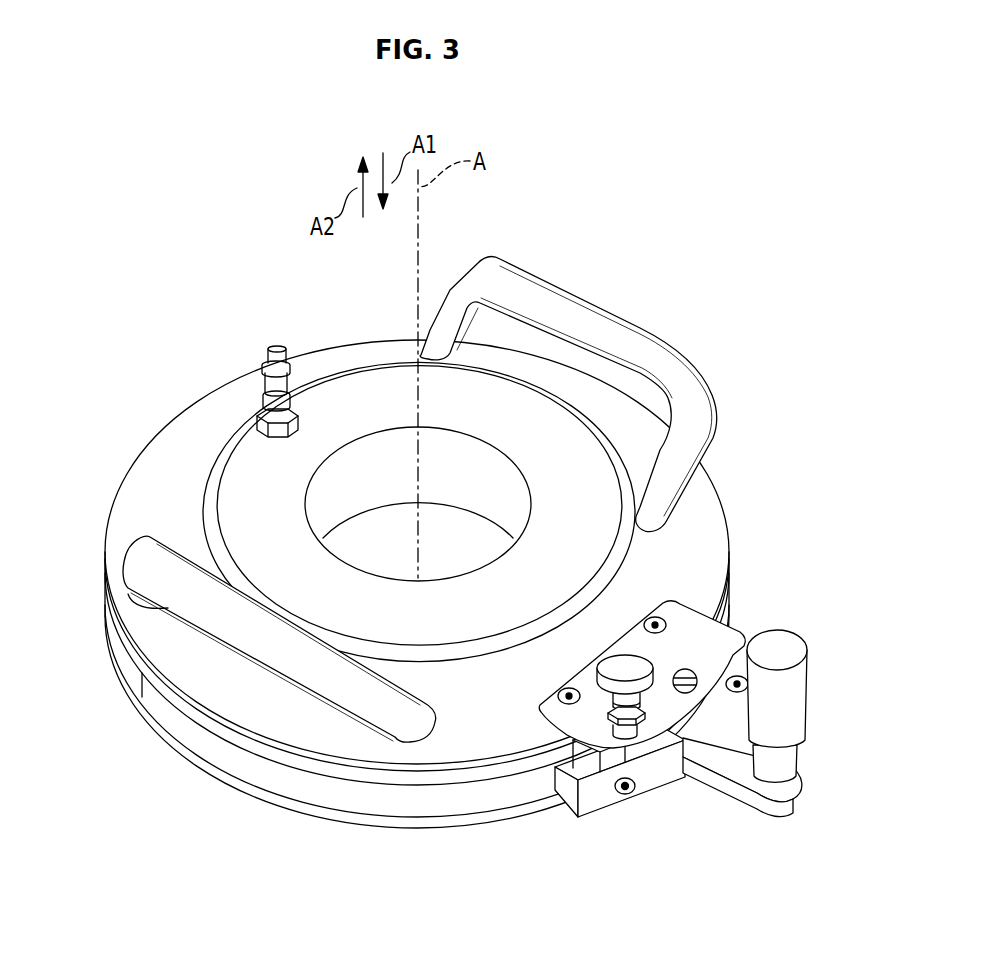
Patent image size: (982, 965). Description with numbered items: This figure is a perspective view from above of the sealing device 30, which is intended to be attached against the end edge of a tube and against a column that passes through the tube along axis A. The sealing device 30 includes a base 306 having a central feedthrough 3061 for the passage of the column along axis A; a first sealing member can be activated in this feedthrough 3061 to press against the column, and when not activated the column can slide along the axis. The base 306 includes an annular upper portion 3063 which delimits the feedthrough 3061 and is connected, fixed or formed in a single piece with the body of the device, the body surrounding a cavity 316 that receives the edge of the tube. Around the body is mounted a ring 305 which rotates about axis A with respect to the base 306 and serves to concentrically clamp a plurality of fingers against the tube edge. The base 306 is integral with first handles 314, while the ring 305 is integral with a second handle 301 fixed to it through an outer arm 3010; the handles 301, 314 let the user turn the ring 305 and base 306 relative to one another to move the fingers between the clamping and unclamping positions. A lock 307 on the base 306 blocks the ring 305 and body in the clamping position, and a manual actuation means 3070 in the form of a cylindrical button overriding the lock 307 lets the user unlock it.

The sealing device 30 is at (764, 418).
The ring 305 is at (270, 775).
The base 306 is at (695, 557).
The feedthrough 3061 is at (440, 445).
The upper portion 3063 is at (347, 397).
The cavity 316 is at (330, 494).
The first handle 314 is at (603, 319).
The outer arm 3010 is at (727, 783).
The lock 307 is at (634, 730).
The manual actuation means 3070 is at (627, 672).
The second handle 301 is at (796, 708).